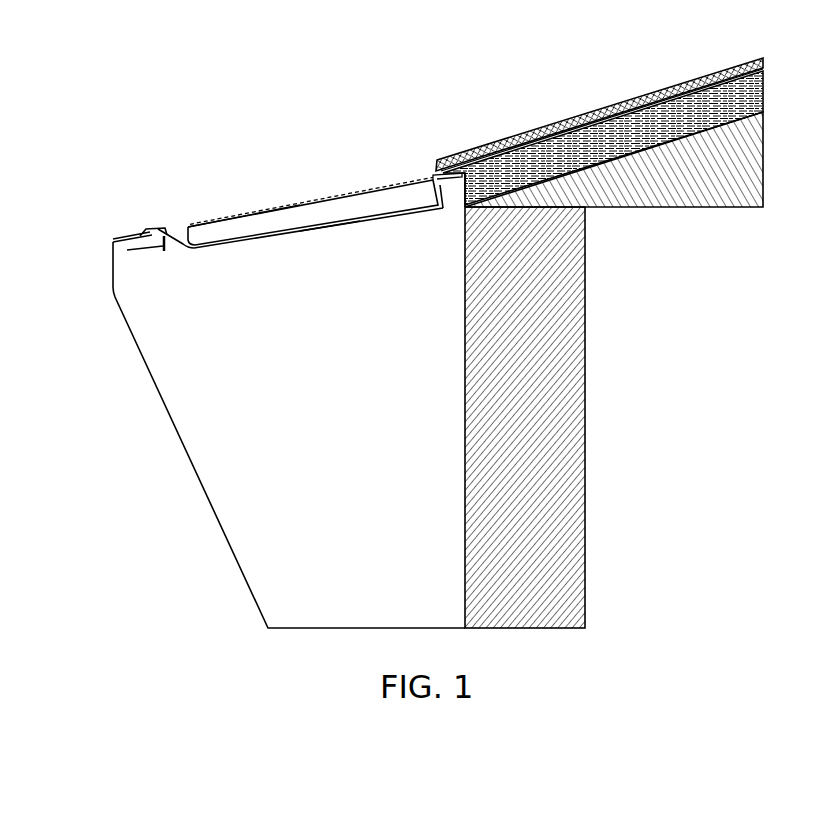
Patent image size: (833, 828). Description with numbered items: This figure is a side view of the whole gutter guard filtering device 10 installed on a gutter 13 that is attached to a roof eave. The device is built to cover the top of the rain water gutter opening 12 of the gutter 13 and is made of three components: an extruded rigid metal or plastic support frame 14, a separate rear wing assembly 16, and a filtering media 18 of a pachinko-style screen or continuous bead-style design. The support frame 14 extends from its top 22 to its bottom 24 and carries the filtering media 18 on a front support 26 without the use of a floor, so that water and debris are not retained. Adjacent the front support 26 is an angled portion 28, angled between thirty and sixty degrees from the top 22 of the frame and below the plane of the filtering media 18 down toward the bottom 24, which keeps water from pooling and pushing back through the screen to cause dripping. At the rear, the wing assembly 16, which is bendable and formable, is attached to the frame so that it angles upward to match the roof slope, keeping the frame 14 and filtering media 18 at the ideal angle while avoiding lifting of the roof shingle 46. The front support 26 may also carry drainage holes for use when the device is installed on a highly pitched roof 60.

The gutter guard filtering device 10 is at (157, 178).
The rain water gutter opening 12 is at (289, 248).
The gutter 13 is at (210, 501).
The support frame 14 is at (362, 221).
The rear wing assembly 16 is at (520, 150).
The filtering media 18 is at (266, 212).
The top 22 is at (382, 178).
The bottom 24 is at (334, 249).
The front support 26 is at (136, 232).
The angled portion 28 is at (165, 250).
The roof shingle 46 is at (610, 112).
The highly pitched roof 60 is at (697, 102).